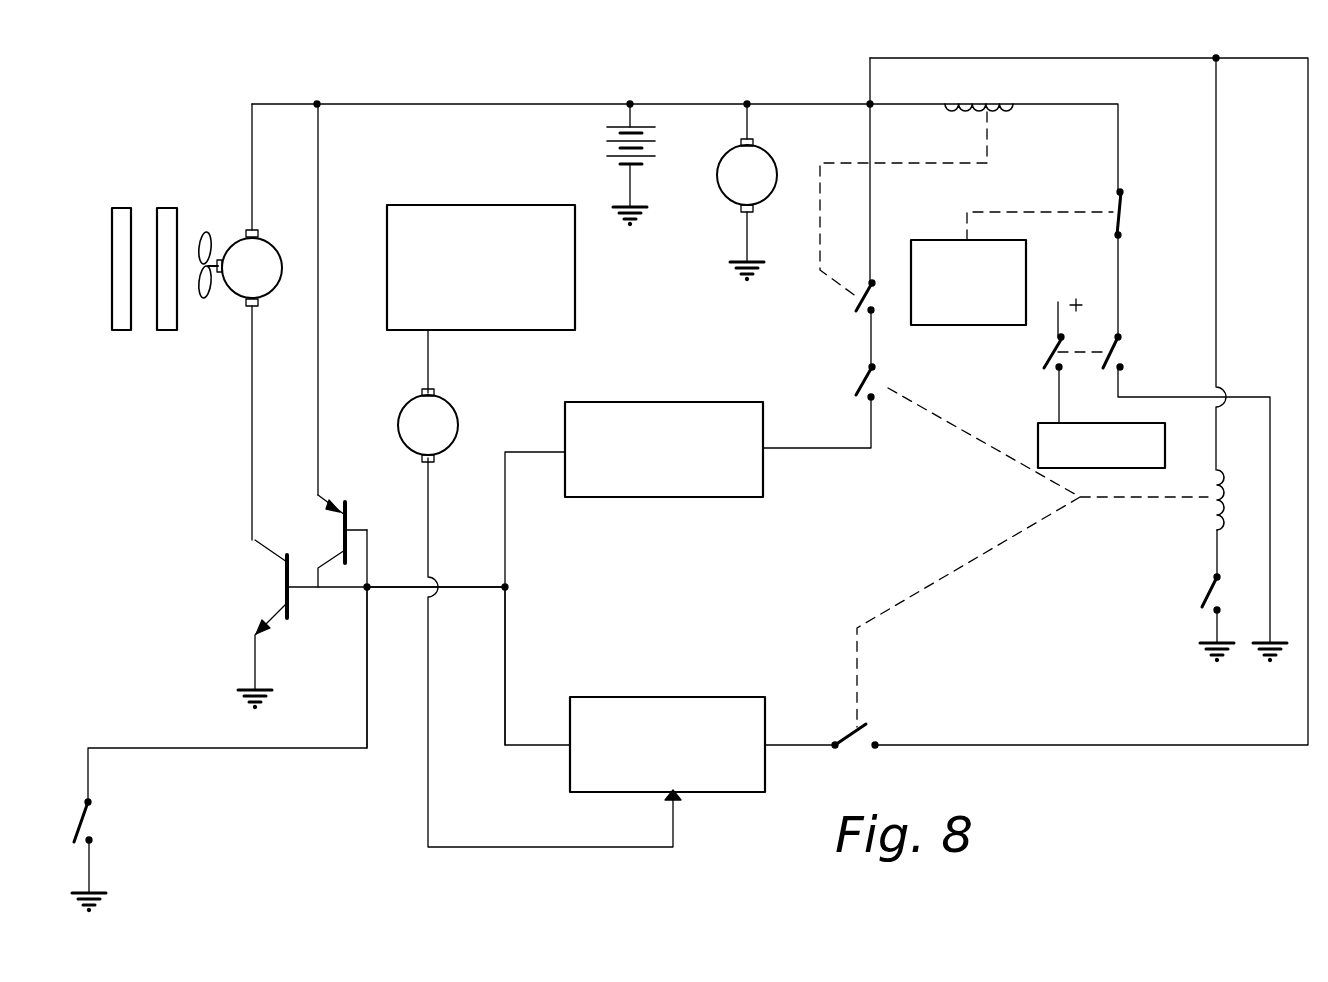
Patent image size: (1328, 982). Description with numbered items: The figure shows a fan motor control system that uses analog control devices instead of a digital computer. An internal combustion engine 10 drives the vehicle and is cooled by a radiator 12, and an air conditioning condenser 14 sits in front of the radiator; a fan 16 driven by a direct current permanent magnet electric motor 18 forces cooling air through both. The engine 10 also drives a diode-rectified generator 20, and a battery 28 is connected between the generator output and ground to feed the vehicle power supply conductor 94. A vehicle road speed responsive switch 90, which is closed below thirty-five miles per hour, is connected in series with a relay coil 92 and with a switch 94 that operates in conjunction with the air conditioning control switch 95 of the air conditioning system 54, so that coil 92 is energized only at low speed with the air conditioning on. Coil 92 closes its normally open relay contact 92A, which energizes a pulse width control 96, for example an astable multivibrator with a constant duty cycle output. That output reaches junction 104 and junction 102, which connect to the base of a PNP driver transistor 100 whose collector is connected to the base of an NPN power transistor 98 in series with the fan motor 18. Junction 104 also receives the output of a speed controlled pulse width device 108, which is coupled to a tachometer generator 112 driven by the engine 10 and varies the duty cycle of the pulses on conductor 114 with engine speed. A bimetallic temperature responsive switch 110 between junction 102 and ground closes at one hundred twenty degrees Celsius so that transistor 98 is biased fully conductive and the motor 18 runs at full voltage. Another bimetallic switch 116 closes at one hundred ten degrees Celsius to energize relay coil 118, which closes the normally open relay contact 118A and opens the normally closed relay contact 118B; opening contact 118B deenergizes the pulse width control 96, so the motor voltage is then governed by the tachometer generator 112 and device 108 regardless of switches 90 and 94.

The internal combustion engine 10 is at (504, 207).
The radiator 12 is at (168, 208).
The condenser 14 is at (121, 208).
The fan 16 is at (215, 232).
The electric motor 18 is at (272, 250).
The generator 20 is at (765, 160).
The battery 28 is at (655, 158).
The air conditioning system 54 is at (1045, 423).
The vehicle road speed responsive switch 90 is at (1120, 218).
The relay coil 92 is at (1003, 97).
The relay contact 92A is at (858, 298).
The vehicle power supply conductor / air conditioning status switch 94 is at (680, 103).
The air conditioning control switch 95 is at (1045, 360).
The pulse width control 96 is at (665, 402).
The NPN transistor 98 is at (280, 586).
The driver transistor 100 is at (350, 512).
The junction 102 is at (370, 590).
The junction 104 is at (510, 585).
The speed controlled pulse width device 108 is at (660, 697).
The bimetallic temperature responsive switch 110 is at (90, 820).
The tachometer generator 112 is at (445, 405).
The conductor 114 is at (510, 645).
The temperature responsive bimetallic switch 116 is at (1205, 585).
The relay coil 118 is at (1205, 507).
The relay contact 118A is at (858, 752).
The relay contact 118B is at (862, 375).